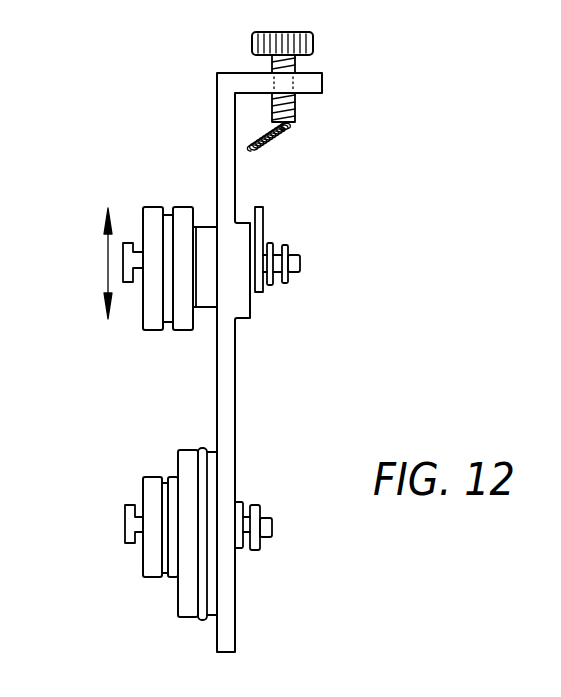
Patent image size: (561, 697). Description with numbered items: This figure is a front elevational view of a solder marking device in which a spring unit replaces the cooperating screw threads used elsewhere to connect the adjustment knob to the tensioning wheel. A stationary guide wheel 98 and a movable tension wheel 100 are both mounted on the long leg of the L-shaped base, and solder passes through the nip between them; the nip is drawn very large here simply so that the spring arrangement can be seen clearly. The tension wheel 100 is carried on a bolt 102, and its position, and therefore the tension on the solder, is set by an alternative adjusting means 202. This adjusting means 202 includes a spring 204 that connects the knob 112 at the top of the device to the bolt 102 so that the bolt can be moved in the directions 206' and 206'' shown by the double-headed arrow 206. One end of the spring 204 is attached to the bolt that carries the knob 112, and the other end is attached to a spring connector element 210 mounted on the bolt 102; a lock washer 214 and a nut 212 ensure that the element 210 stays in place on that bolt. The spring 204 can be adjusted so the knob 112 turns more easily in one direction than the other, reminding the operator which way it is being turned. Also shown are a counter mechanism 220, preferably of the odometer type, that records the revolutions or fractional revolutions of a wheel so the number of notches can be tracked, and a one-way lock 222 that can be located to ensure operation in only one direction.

The stationary guide wheel 98 is at (148, 585).
The movable tension wheel 100 is at (208, 323).
The bolt 102 is at (306, 262).
The knob 112 is at (318, 43).
The adjusting means 202 is at (298, 158).
The spring 204 is at (290, 142).
The double-headed arrow 206 is at (57, 269).
The direction 206' is at (66, 205).
The direction 206'' is at (78, 344).
The spring connector element 210 is at (268, 213).
The nut 212 is at (295, 286).
The lock washer 214 is at (271, 292).
The counter mechanism 220 is at (202, 240).
The one-way lock 222 is at (213, 240).